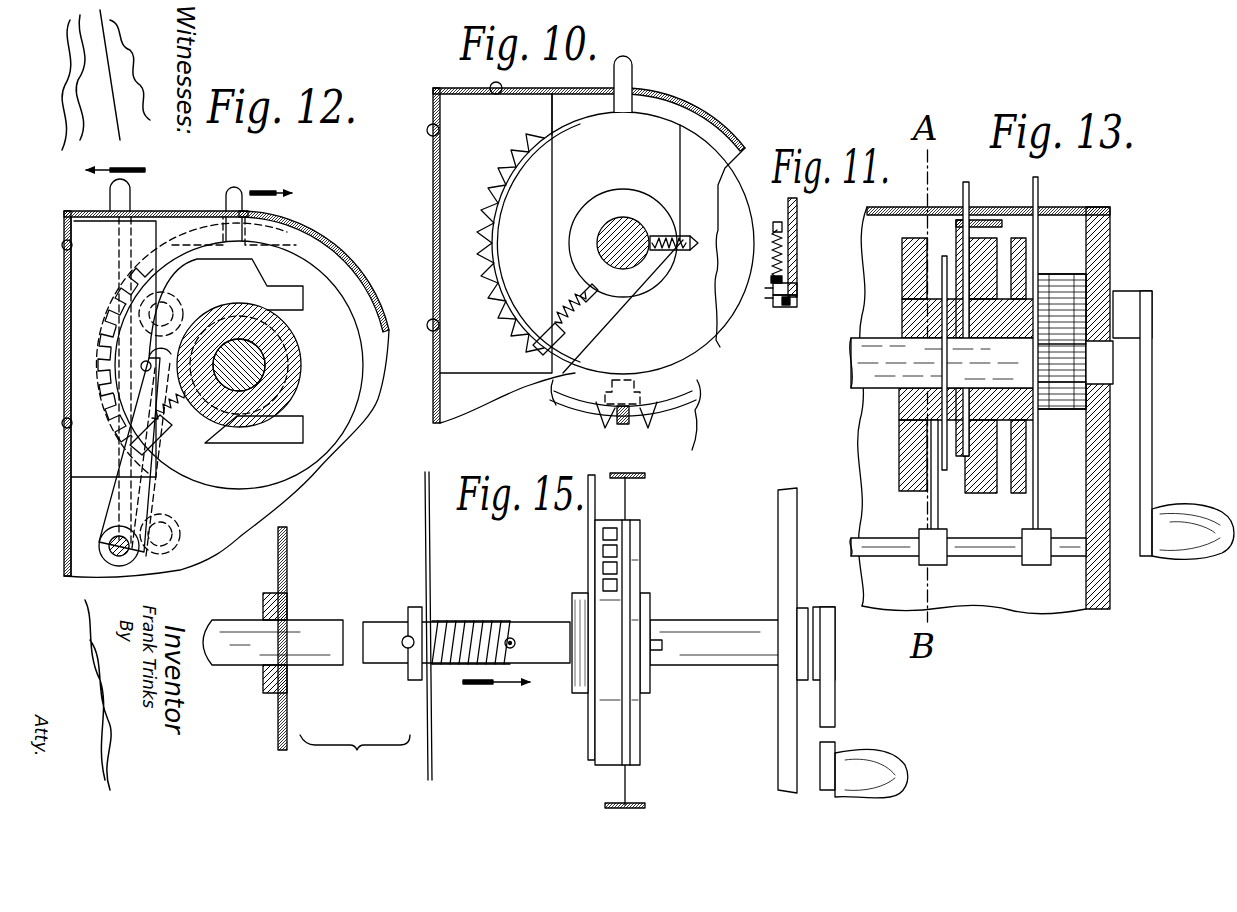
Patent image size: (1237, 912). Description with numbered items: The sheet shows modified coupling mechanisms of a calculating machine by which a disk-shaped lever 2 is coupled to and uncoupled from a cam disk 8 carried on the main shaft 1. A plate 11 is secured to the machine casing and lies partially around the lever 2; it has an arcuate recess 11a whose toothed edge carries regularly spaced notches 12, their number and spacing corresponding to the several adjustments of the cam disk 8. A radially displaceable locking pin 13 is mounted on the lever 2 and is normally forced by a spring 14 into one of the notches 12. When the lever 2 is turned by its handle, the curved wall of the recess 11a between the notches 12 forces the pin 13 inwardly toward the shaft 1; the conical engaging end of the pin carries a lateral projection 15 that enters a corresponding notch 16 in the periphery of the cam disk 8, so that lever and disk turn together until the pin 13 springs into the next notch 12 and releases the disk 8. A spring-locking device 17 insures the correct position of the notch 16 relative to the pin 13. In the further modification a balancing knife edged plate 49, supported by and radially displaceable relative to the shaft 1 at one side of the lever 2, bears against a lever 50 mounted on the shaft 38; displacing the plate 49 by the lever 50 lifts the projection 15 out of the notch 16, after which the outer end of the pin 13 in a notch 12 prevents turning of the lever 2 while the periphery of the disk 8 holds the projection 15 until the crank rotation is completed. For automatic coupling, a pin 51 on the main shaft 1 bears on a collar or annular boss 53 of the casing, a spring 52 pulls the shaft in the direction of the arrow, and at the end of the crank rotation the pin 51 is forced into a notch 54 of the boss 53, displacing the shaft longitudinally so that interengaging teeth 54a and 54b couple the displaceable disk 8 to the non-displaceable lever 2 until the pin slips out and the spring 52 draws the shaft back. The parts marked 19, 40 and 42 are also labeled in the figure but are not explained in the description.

In FIG. 12, the main shaft 1 is at (263, 365).
In FIG. 10, the main shaft 1 is at (650, 250).
In FIG. 13, the main shaft 1 is at (853, 359).
In FIG. 15, the main shaft 1 is at (335, 668).
In FIG. 12, the lever 2 is at (237, 190).
In FIG. 10, the lever 2 is at (633, 82).
In FIG. 11, the lever 2 is at (797, 226).
In FIG. 13, the lever 2 is at (962, 265).
In FIG. 15, the lever 2 is at (590, 720).
In FIG. 12, the cam disk 8 is at (353, 392).
In FIG. 10, the cam disk 8 is at (712, 188).
In FIG. 11, the cam disk 8 is at (784, 250).
In FIG. 13, the cam disk 8 is at (970, 493).
In FIG. 15, the cam disk 8 is at (594, 758).
In FIG. 12, the plate 11 is at (73, 365).
In FIG. 10, the plate 11 is at (440, 158).
In FIG. 10, the arcuate recess 11a is at (522, 156).
In FIG. 12, the notches 12 is at (128, 322).
In FIG. 10, the notches 12 is at (492, 232).
In FIG. 12, the locking pin 13 is at (162, 430).
In FIG. 10, the locking pin 13 is at (550, 322).
In FIG. 11, the locking pin 13 is at (772, 293).
In FIG. 12, the spring 14 is at (176, 420).
In FIG. 10, the spring 14 is at (578, 318).
In FIG. 10, the lateral projection 15 is at (621, 426).
In FIG. 11, the lateral projection 15 is at (797, 302).
In FIG. 10, the notch 16 is at (636, 408).
In FIG. 11, the notch 16 is at (797, 289).
In FIG. 10, the spring-locking device 17 is at (692, 243).
In FIG. 12, the arm 19 is at (276, 296).
In FIG. 12, the shaft 38 is at (125, 562).
In FIG. 13, the shaft 38 is at (878, 562).
In FIG. 12, the rod 40 is at (131, 191).
In FIG. 13, the rod 40 is at (1040, 186).
In FIG. 13, the crank 42 is at (1026, 445).
In FIG. 13, the balancing knife edged plate 49 is at (943, 294).
In FIG. 12, the lever 50 is at (130, 513).
In FIG. 13, the lever 50 is at (932, 507).
In FIG. 15, the pin 51 is at (407, 650).
In FIG. 15, the spring 52 is at (455, 682).
In FIG. 15, the collar or annular boss 53 is at (411, 612).
In FIG. 15, the notch 54 is at (414, 640).
In FIG. 15, the interengaging teeth 54a is at (640, 528).
In FIG. 15, the interengaging teeth 54b is at (612, 574).